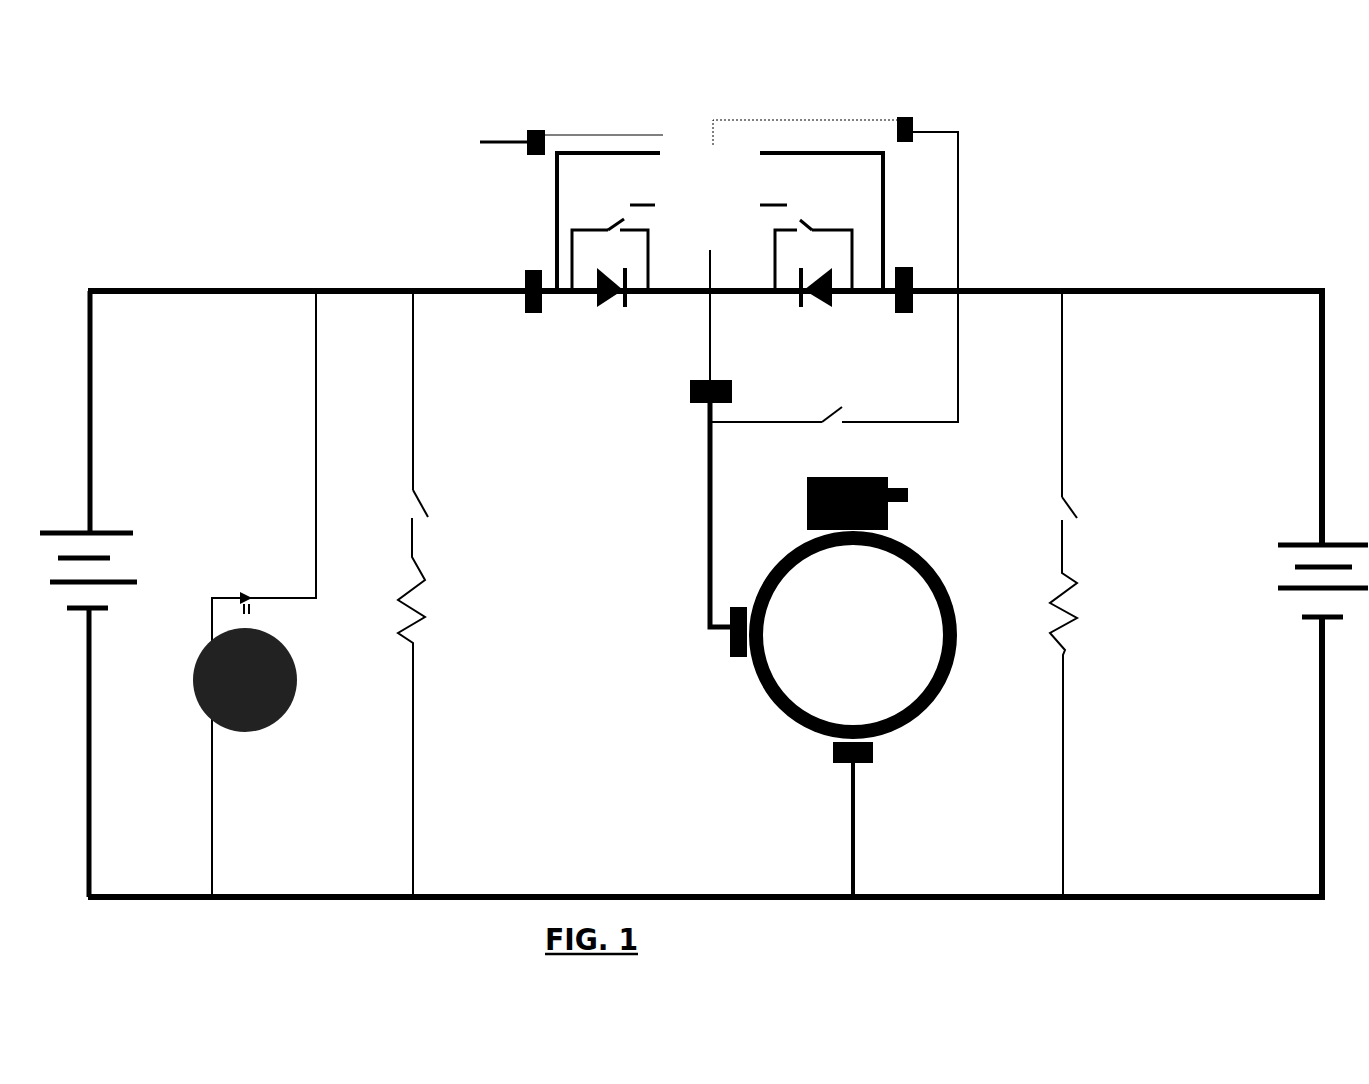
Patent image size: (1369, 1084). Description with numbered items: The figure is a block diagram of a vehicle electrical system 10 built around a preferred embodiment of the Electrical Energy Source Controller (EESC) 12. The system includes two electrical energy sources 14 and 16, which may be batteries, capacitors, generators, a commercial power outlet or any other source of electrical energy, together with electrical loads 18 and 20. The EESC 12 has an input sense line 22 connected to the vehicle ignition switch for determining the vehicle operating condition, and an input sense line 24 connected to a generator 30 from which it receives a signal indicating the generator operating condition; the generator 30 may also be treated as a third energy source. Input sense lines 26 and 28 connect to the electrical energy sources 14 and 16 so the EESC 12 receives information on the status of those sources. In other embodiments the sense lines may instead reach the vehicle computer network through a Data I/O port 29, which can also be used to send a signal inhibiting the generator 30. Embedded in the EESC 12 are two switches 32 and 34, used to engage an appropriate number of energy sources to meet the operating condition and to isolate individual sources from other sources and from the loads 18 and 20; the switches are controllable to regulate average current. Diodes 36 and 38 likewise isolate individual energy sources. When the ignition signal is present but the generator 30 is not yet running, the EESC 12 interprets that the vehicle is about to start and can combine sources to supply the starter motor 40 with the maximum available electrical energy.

The vehicle electrical system 10 is at (272, 259).
The Electrical Energy Source Controller (EESC) 12 is at (540, 225).
The electrical energy source 14 is at (98, 610).
The electrical energy source 16 is at (1300, 618).
The electrical load 18 is at (415, 702).
The electrical load 20 is at (1068, 683).
The input sense line 22 is at (768, 120).
The input sense line 24 is at (705, 503).
The input sense line 26 is at (645, 152).
The input sense line 28 is at (785, 152).
The Data I/O port 29 is at (615, 133).
The generator 30 is at (773, 710).
The switch 32 is at (597, 197).
The switch 34 is at (820, 190).
The diode 36 is at (600, 300).
The diode 38 is at (830, 300).
The starter motor 40 is at (260, 737).